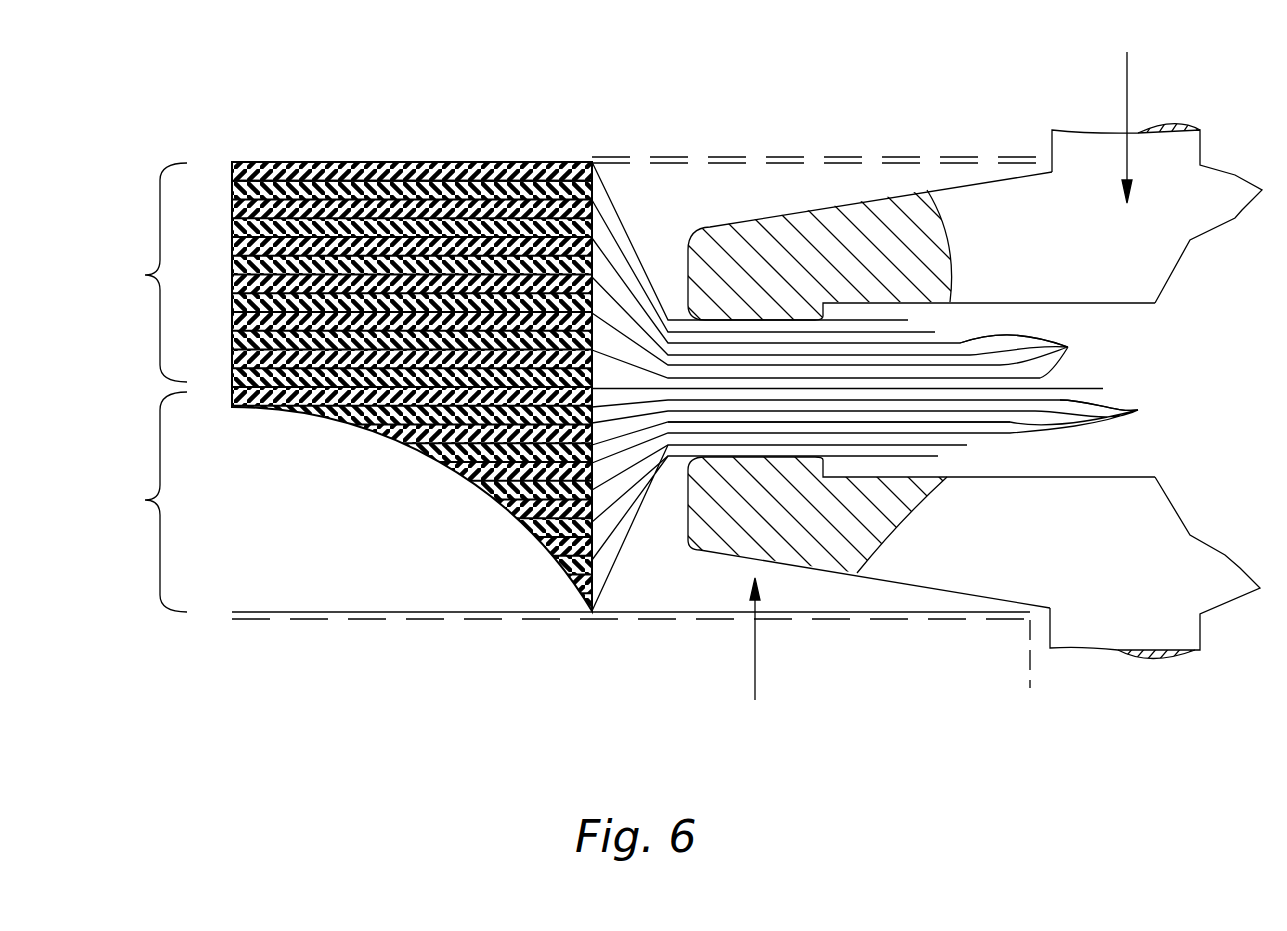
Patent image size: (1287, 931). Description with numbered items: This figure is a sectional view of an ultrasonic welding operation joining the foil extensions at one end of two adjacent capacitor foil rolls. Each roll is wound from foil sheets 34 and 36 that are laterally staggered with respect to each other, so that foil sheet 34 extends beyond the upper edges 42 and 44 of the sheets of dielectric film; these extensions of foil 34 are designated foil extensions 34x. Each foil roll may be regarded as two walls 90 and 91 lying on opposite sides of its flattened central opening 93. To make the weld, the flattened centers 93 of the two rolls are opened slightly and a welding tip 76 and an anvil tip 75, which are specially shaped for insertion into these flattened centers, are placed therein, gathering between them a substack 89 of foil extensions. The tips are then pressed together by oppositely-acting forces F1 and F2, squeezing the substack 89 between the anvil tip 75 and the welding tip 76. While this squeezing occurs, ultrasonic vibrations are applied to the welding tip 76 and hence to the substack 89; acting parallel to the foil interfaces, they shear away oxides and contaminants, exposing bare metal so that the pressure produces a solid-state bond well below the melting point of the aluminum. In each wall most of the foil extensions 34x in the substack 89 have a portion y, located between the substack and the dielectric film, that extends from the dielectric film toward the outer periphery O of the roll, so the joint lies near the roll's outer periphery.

The foil sheet 34 is at (372, 197).
The foil sheet 36 is at (300, 195).
The upper edge of dielectric film sheet 44 is at (590, 190).
The upper edge of dielectric film sheet 42 is at (635, 210).
The foil extensions 34x is at (1075, 380).
The substack of foil extensions 89 is at (885, 417).
The welding tip 76 is at (734, 225).
The anvil tip 75 is at (835, 572).
The flattened center 93 is at (962, 155).
The wall 90 is at (145, 275).
The wall 91 is at (145, 500).
The force F1 is at (1122, 113).
The force F2 is at (752, 661).
The portion of foil extension y is at (600, 230).
The outer periphery of the roll O is at (632, 400).